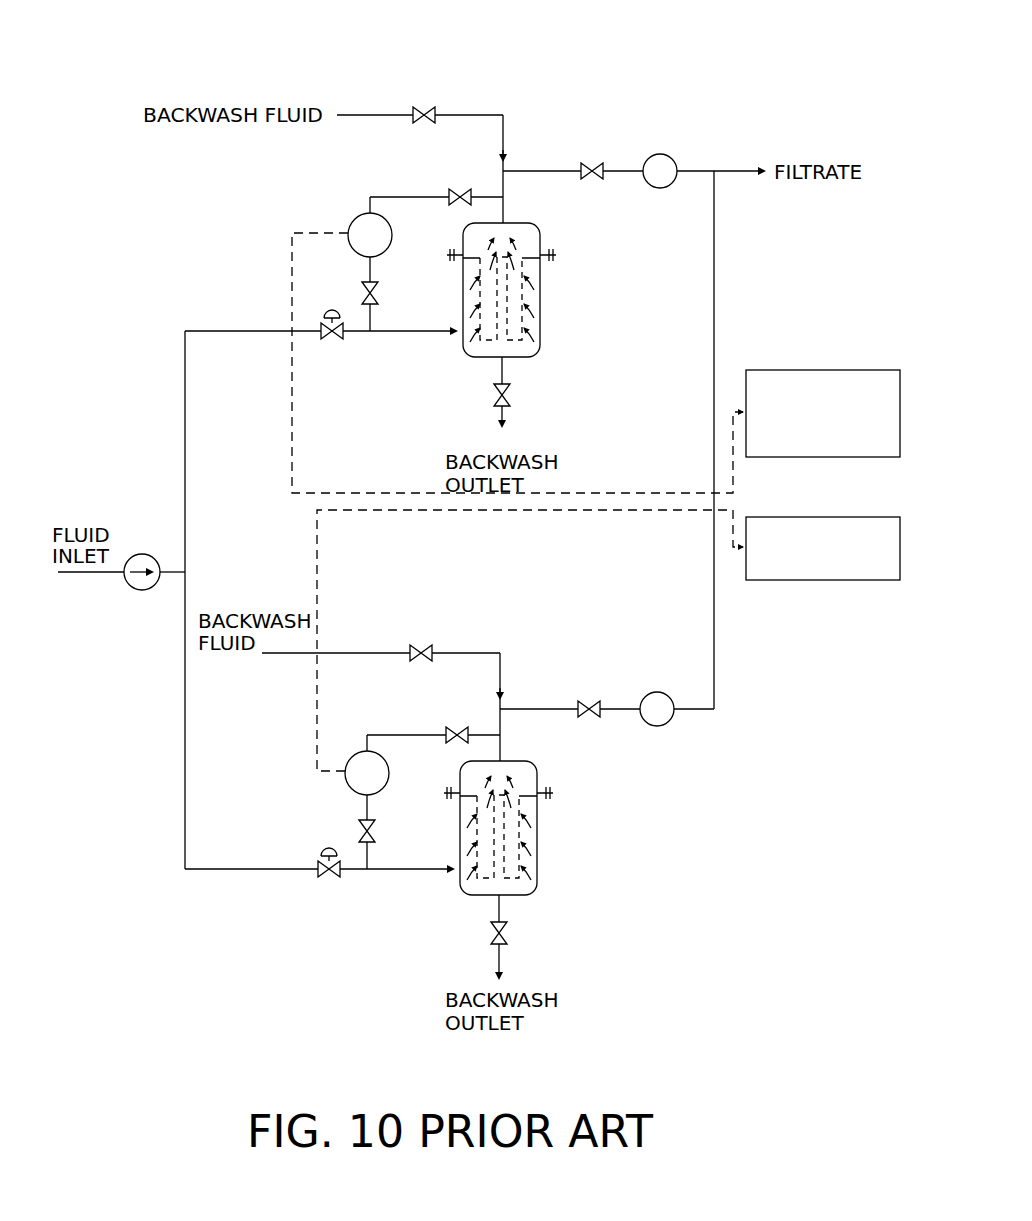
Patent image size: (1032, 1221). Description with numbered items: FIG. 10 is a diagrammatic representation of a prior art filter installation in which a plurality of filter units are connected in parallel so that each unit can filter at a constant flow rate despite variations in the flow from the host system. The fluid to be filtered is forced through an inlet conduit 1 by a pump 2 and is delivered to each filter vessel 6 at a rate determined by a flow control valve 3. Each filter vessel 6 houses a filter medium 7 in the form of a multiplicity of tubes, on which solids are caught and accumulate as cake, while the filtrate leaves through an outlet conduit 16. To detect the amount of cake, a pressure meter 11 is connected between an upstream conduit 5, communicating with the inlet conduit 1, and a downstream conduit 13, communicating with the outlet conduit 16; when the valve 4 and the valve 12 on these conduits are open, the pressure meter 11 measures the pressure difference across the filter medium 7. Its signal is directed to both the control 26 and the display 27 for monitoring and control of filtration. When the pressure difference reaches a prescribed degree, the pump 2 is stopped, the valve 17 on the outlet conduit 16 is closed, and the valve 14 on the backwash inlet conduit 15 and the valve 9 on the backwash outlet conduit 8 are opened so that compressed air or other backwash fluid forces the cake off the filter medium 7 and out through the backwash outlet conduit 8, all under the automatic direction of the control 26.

The inlet conduit 1 is at (90, 575).
The pump 2 is at (142, 590).
The flow control valve 3 is at (335, 307).
The valve 4 is at (377, 292).
The upstream conduit 5 is at (370, 320).
The filter vessel 6 is at (542, 288).
The filter medium 7 is at (523, 322).
The backwash outlet conduit 8 is at (500, 372).
The valve 9 is at (507, 393).
The pressure meter 11 is at (352, 210).
The valve 12 is at (453, 187).
The downstream conduit 13 is at (483, 190).
The valve 14 is at (427, 107).
The backwash inlet conduit 15 is at (472, 113).
The outlet conduit 16 is at (543, 163).
The valve 17 is at (593, 163).
The control 26 is at (818, 583).
The display 27 is at (822, 368).